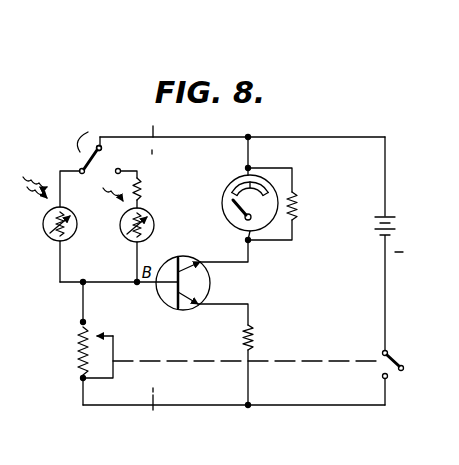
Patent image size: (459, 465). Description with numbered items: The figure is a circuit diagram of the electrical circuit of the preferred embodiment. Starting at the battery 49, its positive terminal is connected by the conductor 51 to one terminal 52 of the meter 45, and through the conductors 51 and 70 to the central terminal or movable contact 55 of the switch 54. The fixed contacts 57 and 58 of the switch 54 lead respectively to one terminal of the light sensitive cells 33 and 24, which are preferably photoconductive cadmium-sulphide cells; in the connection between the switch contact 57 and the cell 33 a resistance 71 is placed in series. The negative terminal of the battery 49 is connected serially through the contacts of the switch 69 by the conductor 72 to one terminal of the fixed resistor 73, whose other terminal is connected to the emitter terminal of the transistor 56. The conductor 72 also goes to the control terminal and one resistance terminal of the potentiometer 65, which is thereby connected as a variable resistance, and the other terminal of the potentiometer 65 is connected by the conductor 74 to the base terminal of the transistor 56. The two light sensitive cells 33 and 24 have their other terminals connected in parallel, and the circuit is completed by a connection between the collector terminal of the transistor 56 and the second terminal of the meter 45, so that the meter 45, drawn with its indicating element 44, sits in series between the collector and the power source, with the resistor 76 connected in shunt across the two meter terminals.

The light sensitive cell 24 is at (57, 240).
The light sensitive cell 33 is at (127, 243).
The meter 44 is at (237, 205).
The meter 45 is at (227, 222).
The battery 49 is at (400, 228).
The conductor 51 is at (362, 136).
The terminal 52 is at (253, 167).
The switch 54 is at (88, 139).
The movable contact 55 is at (103, 149).
The transistor 56 is at (167, 300).
The fixed contact 57 is at (123, 171).
The fixed contact 58 is at (80, 171).
The potentiometer 65 is at (80, 360).
The switch 69 is at (390, 360).
The conductor 70 is at (222, 137).
The resistance 71 is at (140, 196).
The conductor 72 is at (295, 407).
The fixed resistor 73 is at (255, 333).
The conductor 74 is at (84, 297).
The resistor 76 is at (302, 207).